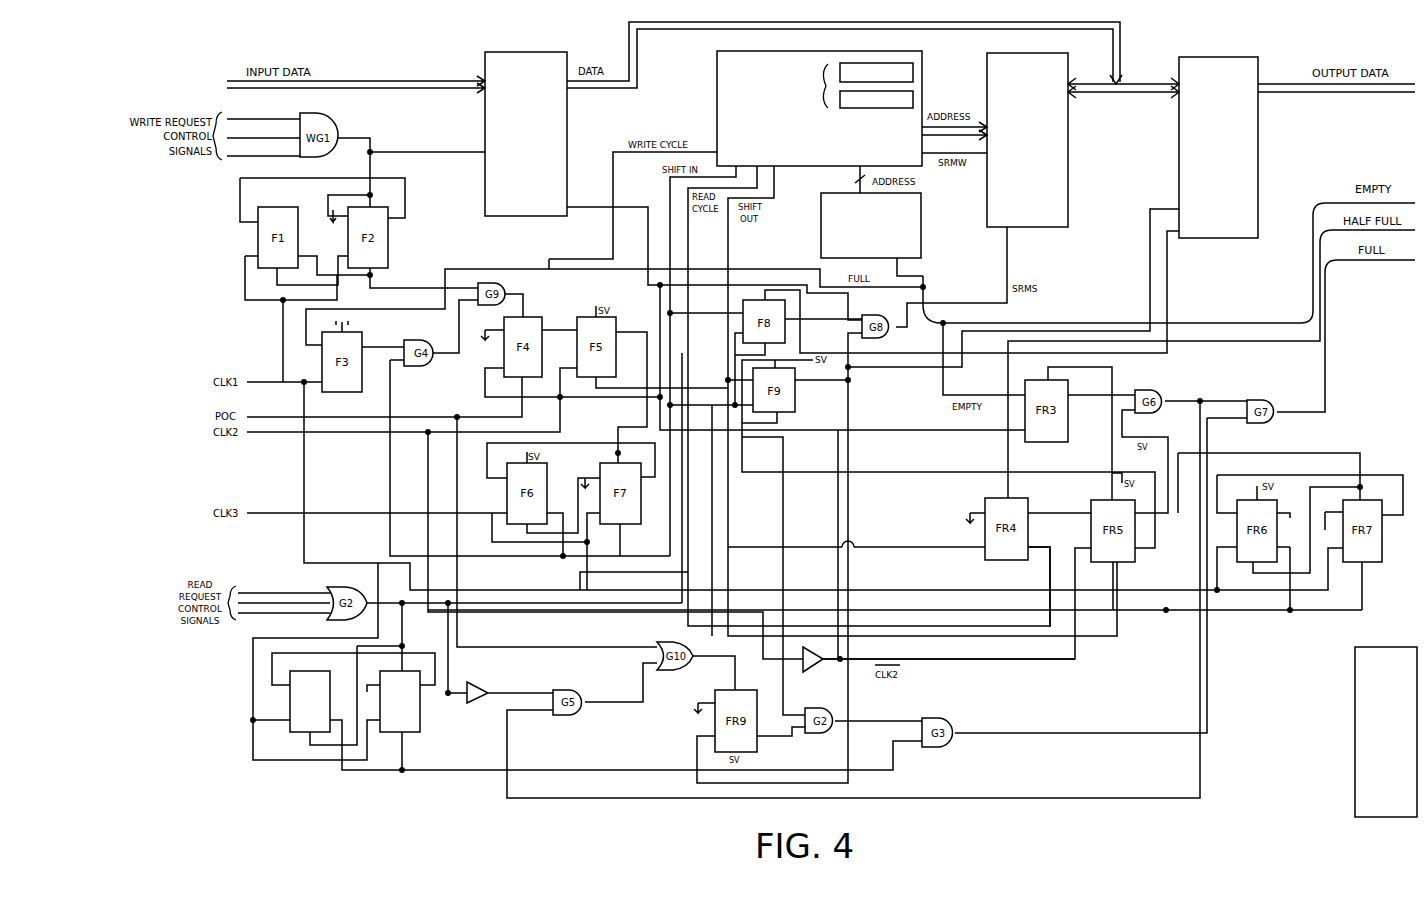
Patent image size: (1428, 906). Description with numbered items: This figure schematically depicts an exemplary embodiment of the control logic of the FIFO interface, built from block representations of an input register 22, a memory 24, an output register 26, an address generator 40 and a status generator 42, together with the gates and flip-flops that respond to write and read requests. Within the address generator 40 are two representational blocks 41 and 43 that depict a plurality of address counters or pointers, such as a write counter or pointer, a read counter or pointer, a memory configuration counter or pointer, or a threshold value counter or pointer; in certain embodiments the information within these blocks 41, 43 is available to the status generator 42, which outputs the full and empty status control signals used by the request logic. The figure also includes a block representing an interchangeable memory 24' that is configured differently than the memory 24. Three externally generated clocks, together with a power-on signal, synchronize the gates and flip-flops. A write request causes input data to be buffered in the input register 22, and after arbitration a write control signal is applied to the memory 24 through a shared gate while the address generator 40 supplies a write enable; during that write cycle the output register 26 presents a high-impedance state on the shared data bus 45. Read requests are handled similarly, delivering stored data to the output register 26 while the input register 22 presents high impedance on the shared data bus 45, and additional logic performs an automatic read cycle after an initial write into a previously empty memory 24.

The input register 22 is at (515, 212).
The memory 24 is at (1033, 160).
The output register 26 is at (1240, 227).
The address generator 40 is at (717, 82).
The representational block of address counters or pointers 41 is at (913, 75).
The status generator 42 is at (921, 232).
The representational block of address counters or pointers 43 is at (897, 108).
The shared data bus 45 is at (1118, 92).
The interchangeable memory 24' is at (853, 754).